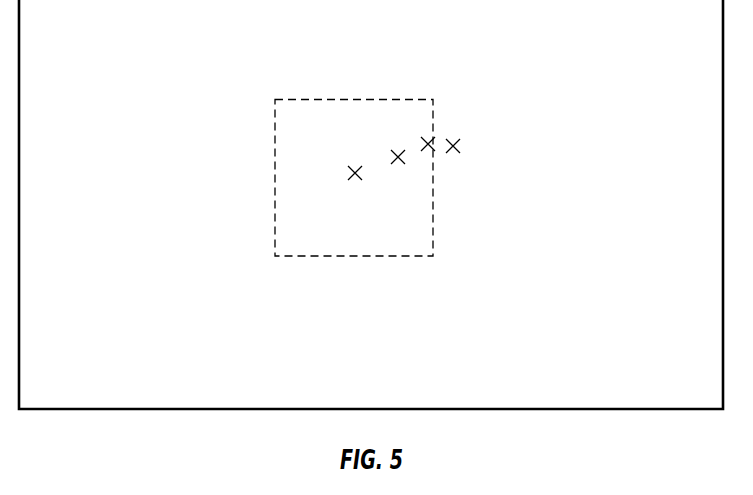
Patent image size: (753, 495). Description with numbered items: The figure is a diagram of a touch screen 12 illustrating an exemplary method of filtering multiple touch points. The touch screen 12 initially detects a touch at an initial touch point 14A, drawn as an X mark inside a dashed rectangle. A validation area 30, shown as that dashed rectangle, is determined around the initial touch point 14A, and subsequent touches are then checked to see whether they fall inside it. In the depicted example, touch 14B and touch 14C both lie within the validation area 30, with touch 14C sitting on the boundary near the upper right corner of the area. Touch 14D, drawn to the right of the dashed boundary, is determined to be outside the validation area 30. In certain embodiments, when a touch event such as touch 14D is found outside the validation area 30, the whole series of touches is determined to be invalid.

The touch screen 12 is at (130, 47).
The validation area 30 is at (273, 175).
The initial touch point 14A is at (361, 174).
The subsequent touch 14B is at (404, 158).
The subsequent touch 14C is at (429, 142).
The touch outside area 14D is at (459, 150).